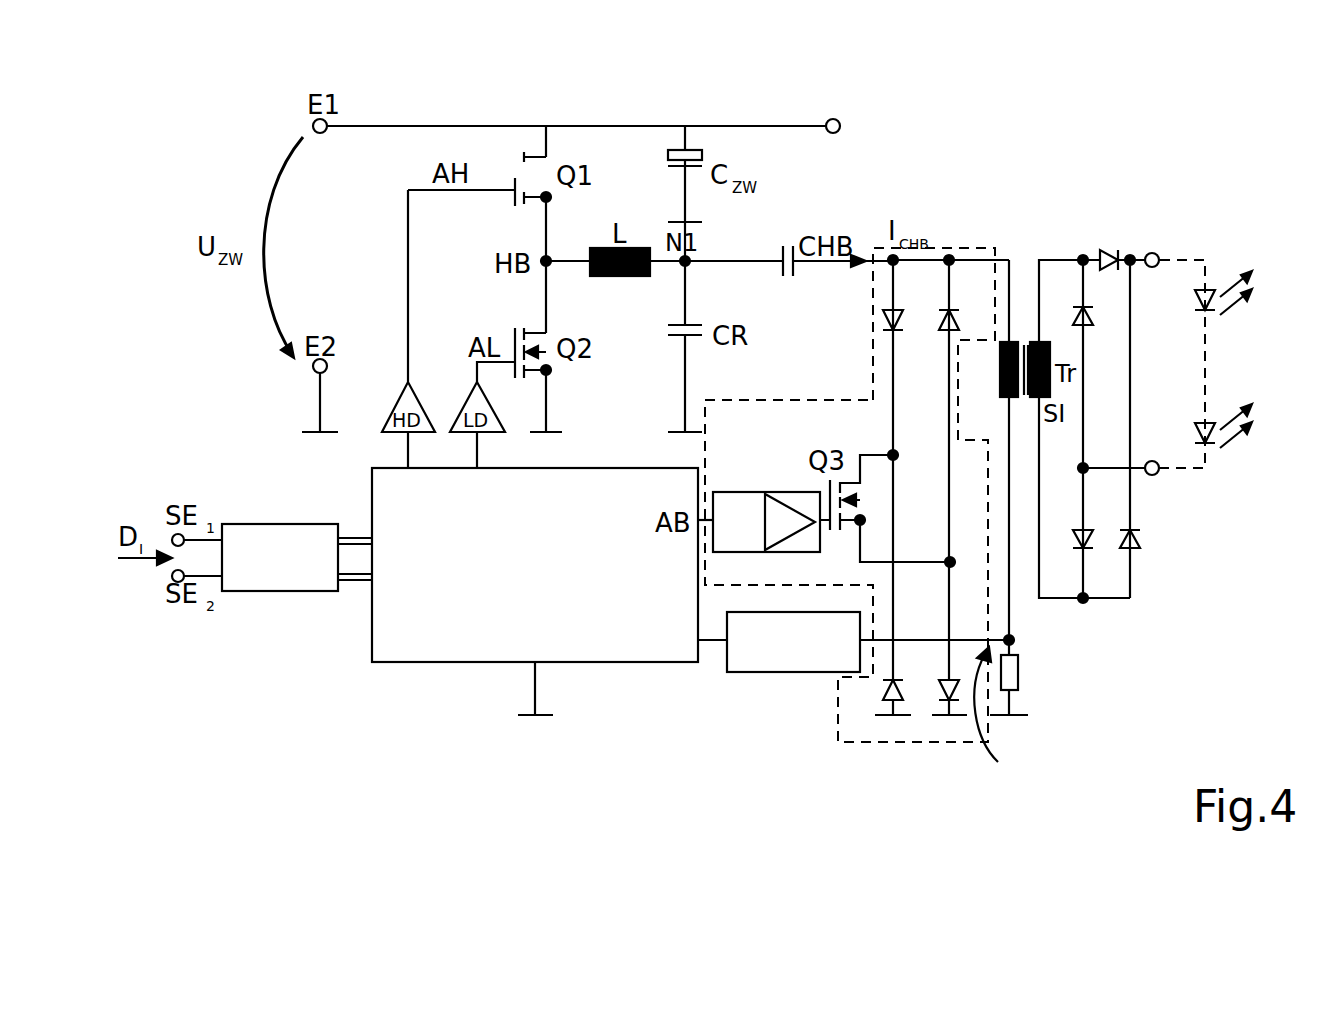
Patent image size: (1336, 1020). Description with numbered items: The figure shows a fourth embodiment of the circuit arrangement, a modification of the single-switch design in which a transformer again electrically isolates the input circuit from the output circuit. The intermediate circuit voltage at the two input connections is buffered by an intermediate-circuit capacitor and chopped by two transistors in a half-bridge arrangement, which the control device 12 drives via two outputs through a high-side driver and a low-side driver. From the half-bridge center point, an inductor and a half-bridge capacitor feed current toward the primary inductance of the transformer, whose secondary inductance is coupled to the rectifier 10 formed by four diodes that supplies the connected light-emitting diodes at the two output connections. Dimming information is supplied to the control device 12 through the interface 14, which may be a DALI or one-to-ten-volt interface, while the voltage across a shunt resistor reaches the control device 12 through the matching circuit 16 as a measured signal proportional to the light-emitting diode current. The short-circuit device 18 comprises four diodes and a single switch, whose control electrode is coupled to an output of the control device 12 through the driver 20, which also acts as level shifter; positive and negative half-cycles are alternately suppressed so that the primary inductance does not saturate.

The rectifier 10 is at (1087, 186).
The control device 12 is at (412, 650).
The interface 14 is at (283, 583).
The matching circuit 16 is at (766, 655).
The short-circuit device 18 is at (972, 248).
The driver 20 is at (740, 492).